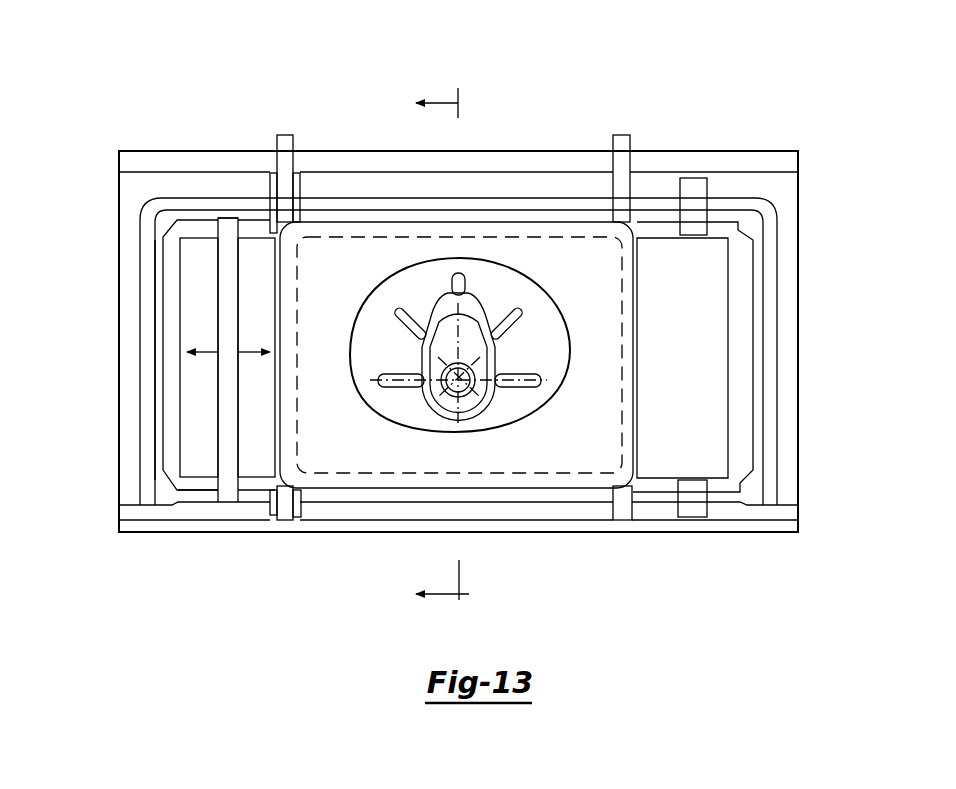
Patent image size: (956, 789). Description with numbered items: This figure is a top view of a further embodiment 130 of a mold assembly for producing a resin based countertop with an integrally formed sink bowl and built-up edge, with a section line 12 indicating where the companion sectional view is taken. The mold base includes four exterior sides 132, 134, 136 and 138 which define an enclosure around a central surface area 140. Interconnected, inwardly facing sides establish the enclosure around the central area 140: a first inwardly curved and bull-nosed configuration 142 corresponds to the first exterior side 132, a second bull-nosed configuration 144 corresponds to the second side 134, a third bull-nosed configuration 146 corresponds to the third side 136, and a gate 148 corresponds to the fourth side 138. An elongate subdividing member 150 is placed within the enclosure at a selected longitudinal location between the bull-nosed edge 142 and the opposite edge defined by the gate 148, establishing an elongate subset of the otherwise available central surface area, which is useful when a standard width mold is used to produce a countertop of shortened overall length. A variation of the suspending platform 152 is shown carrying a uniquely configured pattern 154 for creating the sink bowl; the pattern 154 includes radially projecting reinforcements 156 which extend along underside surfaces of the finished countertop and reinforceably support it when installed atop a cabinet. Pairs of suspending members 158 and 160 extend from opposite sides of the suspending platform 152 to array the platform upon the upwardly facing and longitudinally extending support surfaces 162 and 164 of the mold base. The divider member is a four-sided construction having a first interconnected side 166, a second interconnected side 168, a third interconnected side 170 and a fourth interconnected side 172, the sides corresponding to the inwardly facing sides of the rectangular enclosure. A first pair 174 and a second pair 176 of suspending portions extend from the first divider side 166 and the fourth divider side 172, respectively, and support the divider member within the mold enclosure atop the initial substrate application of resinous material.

The section line 12 is at (424, 349).
The further illustrated embodiment 130 is at (160, 116).
The first exterior side 132 is at (528, 152).
The second exterior side 134 is at (119, 272).
The third exterior side 136 is at (800, 237).
The fourth exterior side 138 is at (488, 534).
The central surface area 140 is at (248, 284).
The first bull-nosed configuration 142 is at (576, 200).
The second bull-nosed configuration 144 is at (163, 233).
The third bull-nosed configuration 146 is at (766, 330).
The gate 148 is at (513, 497).
The elongate subdividing member 150 is at (222, 324).
The suspending platform 152 is at (566, 284).
The sink bowl pattern 154 is at (405, 288).
The radially projecting reinforcements 156 is at (402, 391).
The first pair of suspending members 158 is at (291, 137).
The second pair of suspending members 160 is at (288, 522).
The first support surface of mold base 162 is at (500, 162).
The second support surface of mold base 164 is at (440, 514).
The first interconnected side of divider member 166 is at (272, 182).
The second interconnected side of divider member 168 is at (160, 318).
The third interconnected side of divider member 170 is at (746, 356).
The fourth interconnected side of divider member 172 is at (205, 492).
The first pair of suspending portions 174 is at (243, 217).
The second pair of suspending portions 176 is at (303, 506).